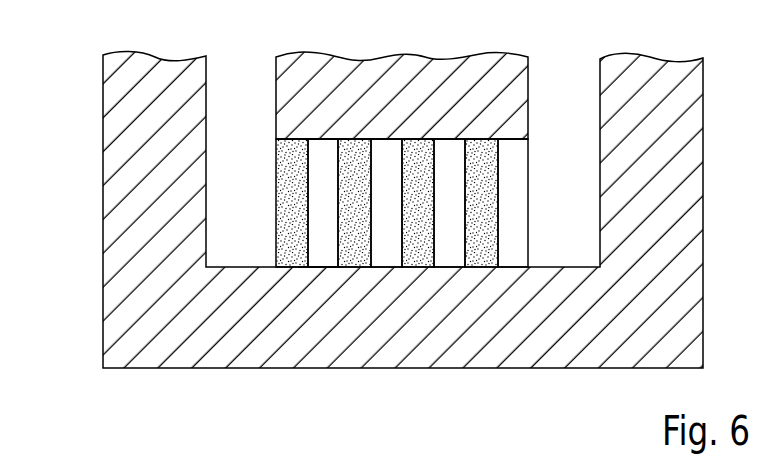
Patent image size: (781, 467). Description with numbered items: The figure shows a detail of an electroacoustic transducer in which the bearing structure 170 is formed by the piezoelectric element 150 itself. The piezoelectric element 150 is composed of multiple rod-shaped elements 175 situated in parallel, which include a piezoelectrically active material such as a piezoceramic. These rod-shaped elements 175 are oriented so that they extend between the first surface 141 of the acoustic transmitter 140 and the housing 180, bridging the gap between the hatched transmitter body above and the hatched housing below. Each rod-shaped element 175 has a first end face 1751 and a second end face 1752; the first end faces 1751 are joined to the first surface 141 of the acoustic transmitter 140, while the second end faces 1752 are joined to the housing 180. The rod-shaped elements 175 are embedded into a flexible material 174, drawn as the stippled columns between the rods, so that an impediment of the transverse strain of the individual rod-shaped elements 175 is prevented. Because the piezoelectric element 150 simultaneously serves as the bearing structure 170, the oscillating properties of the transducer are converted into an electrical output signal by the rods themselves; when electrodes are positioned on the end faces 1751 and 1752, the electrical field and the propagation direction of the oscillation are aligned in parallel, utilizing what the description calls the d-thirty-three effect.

The acoustic transmitter 140 is at (410, 70).
The first surface 141 is at (478, 158).
The piezoelectric element 150 is at (297, 264).
The bearing structure 170 is at (297, 264).
The flexible material 174 is at (482, 248).
The rod-shaped elements 175 is at (512, 210).
The housing 180 is at (450, 250).
The first end face 1751 is at (335, 125).
The second end face 1752 is at (316, 343).